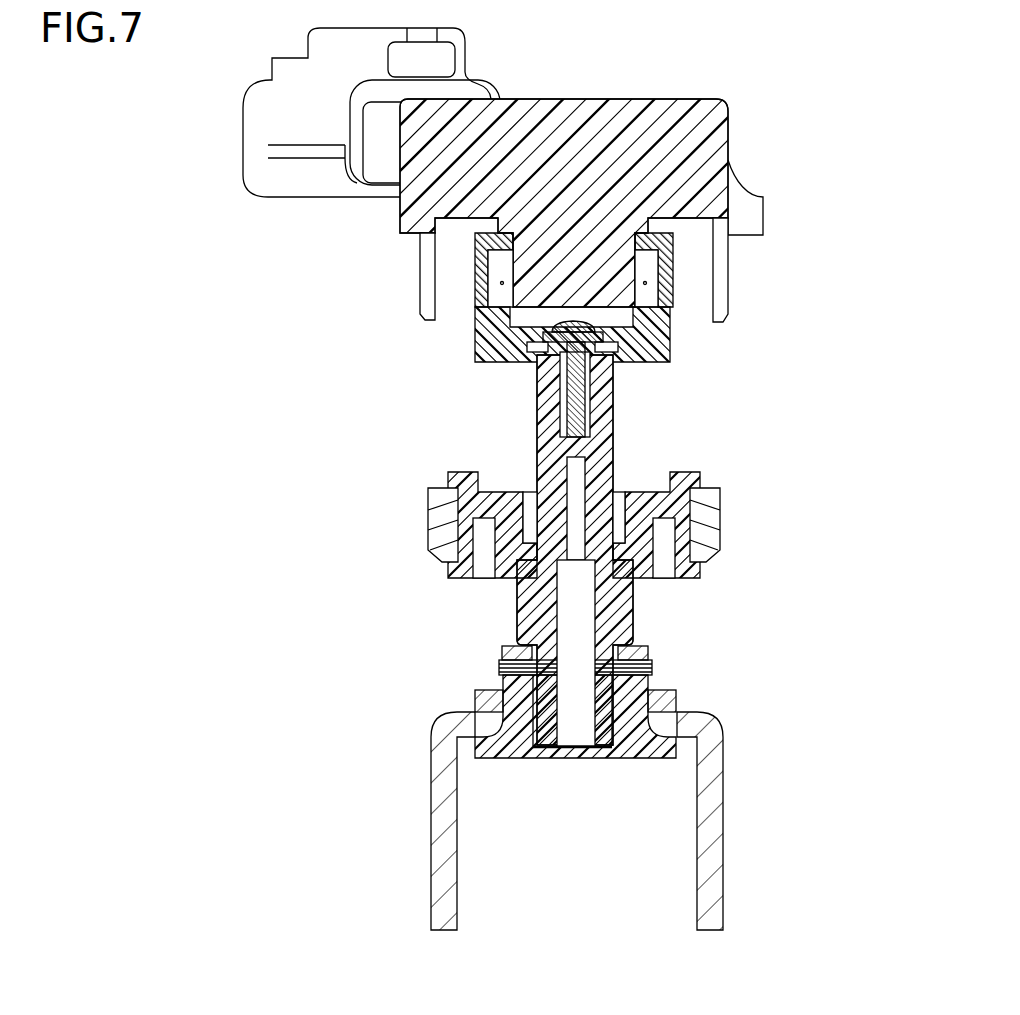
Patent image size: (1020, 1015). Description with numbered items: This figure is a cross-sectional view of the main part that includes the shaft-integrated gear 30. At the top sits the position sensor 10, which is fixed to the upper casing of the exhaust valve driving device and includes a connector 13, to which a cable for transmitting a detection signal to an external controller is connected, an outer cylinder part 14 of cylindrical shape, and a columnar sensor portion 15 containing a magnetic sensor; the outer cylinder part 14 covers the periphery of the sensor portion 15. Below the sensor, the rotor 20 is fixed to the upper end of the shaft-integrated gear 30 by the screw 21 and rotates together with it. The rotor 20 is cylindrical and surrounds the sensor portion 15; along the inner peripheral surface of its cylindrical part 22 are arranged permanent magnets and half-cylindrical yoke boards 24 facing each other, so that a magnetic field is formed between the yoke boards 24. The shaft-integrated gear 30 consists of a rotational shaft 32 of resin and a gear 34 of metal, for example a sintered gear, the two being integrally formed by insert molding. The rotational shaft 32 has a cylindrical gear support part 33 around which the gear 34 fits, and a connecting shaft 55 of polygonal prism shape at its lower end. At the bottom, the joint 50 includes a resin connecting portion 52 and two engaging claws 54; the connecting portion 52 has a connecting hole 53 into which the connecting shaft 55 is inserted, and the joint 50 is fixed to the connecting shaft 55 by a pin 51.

The position sensor 10 is at (740, 129).
The connector 13 is at (252, 125).
The outer cylinder part 14 is at (432, 260).
The sensor portion 15 is at (718, 272).
The rotor 20 is at (680, 346).
The screw 21 is at (610, 392).
The cylindrical part 22 is at (480, 270).
The yoke board 24 is at (498, 298).
The shaft-integrated gear 30 is at (785, 436).
The rotational shaft 32 is at (622, 450).
The gear support part 33 is at (458, 478).
The gear 34 is at (720, 521).
The joint 50 is at (734, 765).
The pin 51 is at (499, 667).
The connecting portion 52 is at (514, 760).
The connecting hole 53 is at (603, 748).
The engaging claw 54 is at (432, 858).
The connecting shaft 55 is at (476, 700).